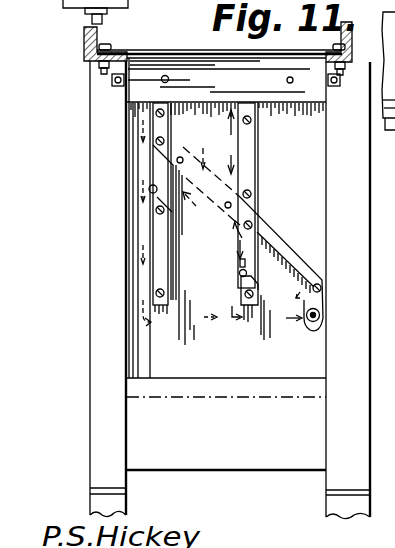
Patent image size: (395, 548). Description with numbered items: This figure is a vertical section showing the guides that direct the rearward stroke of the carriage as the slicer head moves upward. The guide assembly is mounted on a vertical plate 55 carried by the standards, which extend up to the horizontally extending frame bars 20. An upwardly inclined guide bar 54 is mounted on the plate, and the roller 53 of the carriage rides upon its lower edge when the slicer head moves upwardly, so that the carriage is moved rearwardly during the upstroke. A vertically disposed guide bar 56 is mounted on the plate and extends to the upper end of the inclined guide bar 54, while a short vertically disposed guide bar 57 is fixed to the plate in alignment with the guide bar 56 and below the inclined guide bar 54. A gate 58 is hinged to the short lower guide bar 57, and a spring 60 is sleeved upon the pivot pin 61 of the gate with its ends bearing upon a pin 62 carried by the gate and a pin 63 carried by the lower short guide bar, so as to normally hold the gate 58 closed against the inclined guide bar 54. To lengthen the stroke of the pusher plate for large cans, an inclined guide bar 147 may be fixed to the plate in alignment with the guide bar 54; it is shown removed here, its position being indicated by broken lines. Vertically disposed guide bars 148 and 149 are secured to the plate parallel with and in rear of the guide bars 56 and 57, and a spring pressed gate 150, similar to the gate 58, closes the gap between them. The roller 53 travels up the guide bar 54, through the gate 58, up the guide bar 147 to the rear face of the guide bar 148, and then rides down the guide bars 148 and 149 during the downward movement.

The frame bars 20 is at (83, 40).
The vertically disposed guide bar 148 is at (146, 127).
The spring pressed gate 150 is at (152, 166).
The vertically disposed guide bar 149 is at (154, 238).
The vertical plate 55 is at (150, 343).
The inclined guide bar 147 is at (212, 142).
The vertically disposed guide bar 56 is at (252, 155).
The pin 62 is at (258, 241).
The inclined guide bar 54 is at (290, 254).
The gate 58 is at (238, 238).
The spring 60 is at (241, 265).
The pivot pin 61 is at (240, 275).
The pin 63 is at (246, 290).
The short vertically disposed guide bar 57 is at (256, 321).
The roller 53 is at (311, 323).